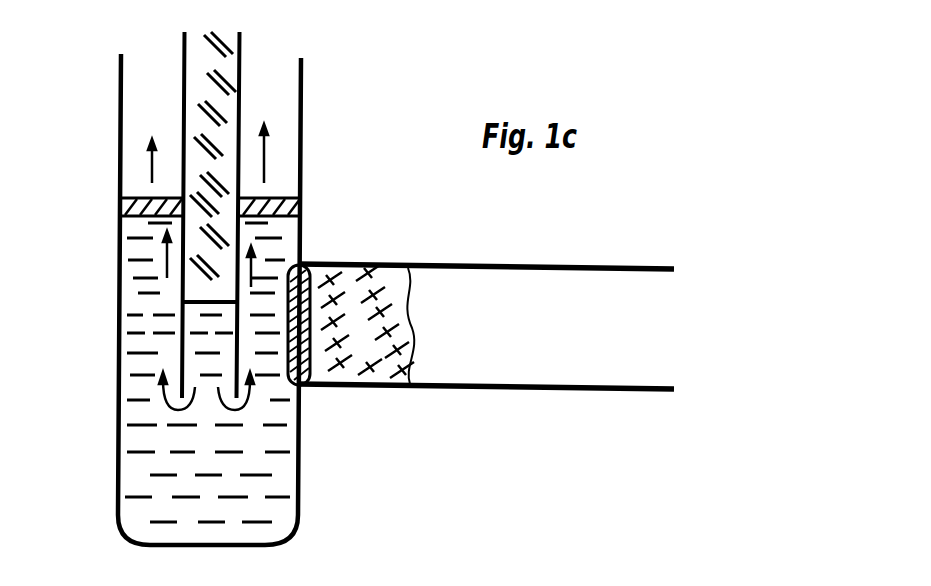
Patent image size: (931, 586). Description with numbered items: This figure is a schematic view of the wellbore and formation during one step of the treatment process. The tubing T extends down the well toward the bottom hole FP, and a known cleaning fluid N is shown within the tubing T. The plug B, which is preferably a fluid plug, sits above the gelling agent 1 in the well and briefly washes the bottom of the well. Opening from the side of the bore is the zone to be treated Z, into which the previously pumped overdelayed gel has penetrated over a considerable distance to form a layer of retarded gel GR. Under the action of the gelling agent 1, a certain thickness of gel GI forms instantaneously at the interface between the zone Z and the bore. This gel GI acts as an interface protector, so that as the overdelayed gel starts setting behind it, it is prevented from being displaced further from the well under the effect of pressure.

The cleaning fluid N is at (212, 57).
The tubing T is at (183, 112).
The plug B is at (302, 208).
The gelling agent 1 is at (140, 327).
The bottom hole FP is at (108, 506).
The layer of retarded gel GR is at (390, 295).
The gel GI is at (300, 401).
The zone to be treated Z is at (551, 346).